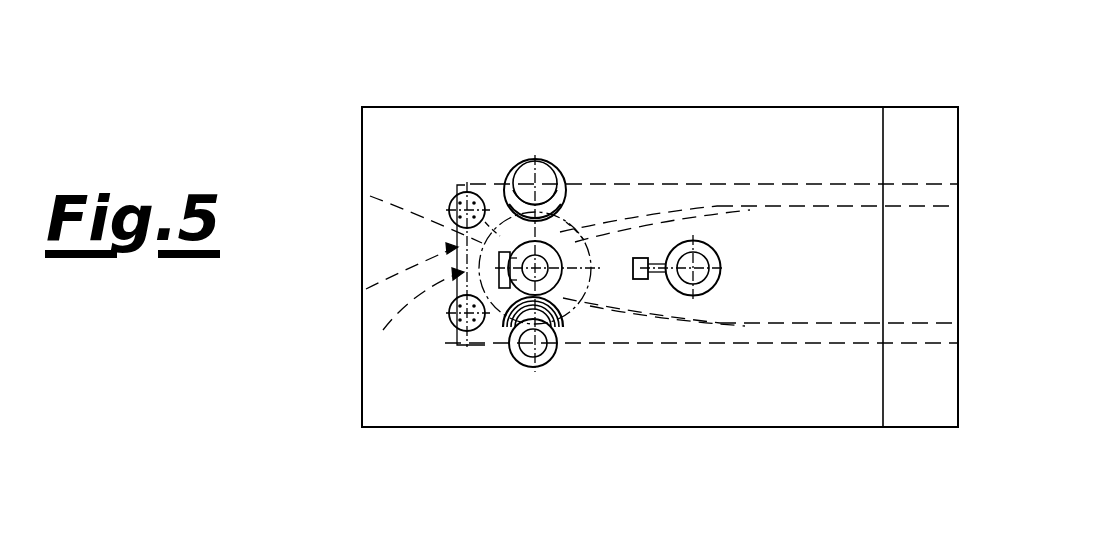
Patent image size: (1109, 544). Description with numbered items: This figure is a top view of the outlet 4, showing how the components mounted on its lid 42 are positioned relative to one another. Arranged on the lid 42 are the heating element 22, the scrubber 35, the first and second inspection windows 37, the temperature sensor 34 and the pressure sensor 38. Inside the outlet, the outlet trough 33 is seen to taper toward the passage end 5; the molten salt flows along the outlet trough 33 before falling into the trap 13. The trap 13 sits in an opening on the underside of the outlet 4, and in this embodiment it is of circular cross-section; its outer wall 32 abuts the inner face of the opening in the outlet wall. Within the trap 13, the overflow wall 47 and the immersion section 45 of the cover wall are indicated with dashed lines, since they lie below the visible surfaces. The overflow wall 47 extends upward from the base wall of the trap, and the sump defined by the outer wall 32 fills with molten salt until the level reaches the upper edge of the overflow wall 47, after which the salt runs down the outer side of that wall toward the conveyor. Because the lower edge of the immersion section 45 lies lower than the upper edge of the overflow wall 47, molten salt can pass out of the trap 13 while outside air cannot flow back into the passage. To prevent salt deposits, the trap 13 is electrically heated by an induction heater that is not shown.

The outlet 4 is at (826, 88).
The passage end 5 is at (366, 289).
The trap 13 is at (383, 330).
The heating element 22 is at (560, 250).
The outer wall 32 is at (370, 196).
The outlet trough 33 is at (650, 317).
The temperature sensor 34 is at (452, 202).
The scrubber 35 is at (520, 353).
The inspection window 37 is at (555, 156).
The pressure sensor 38 is at (450, 318).
The lid 42 is at (703, 108).
The immersion section 45 is at (583, 235).
The overflow wall 47 is at (492, 212).